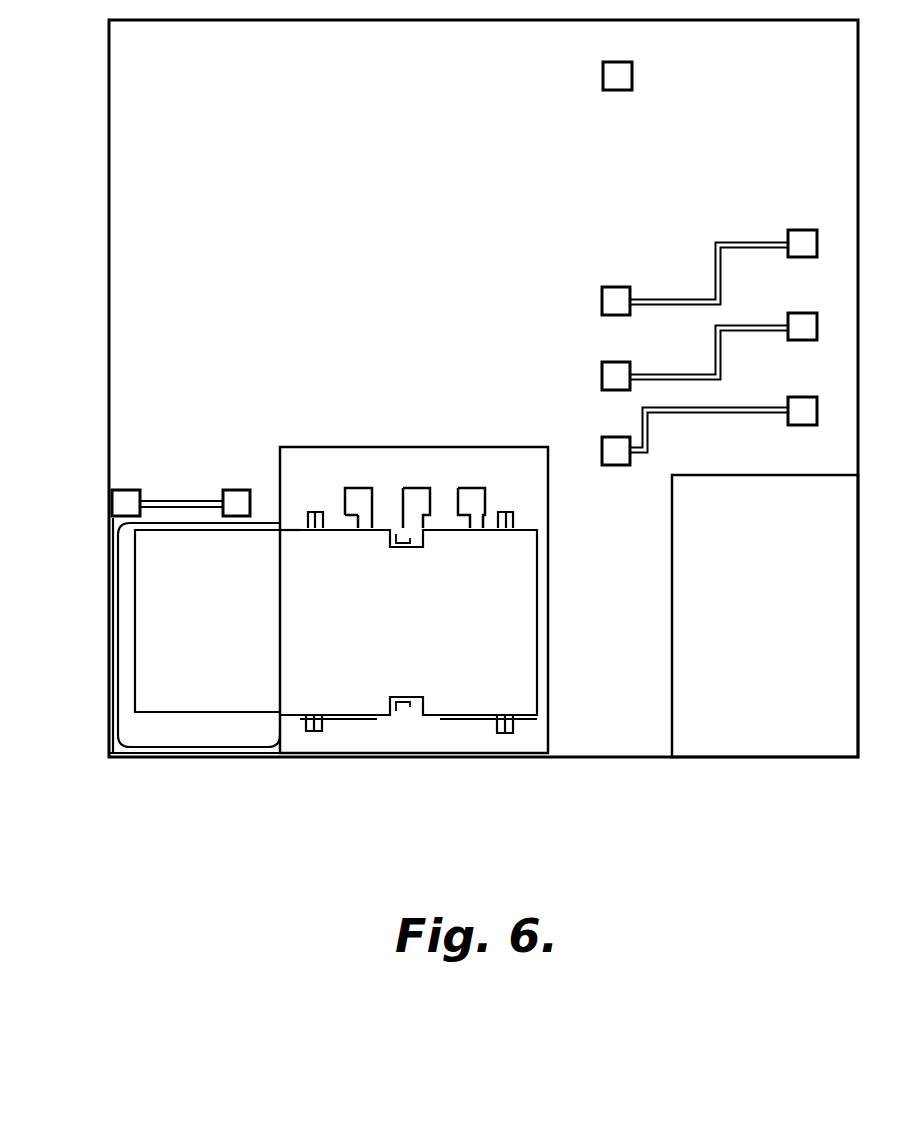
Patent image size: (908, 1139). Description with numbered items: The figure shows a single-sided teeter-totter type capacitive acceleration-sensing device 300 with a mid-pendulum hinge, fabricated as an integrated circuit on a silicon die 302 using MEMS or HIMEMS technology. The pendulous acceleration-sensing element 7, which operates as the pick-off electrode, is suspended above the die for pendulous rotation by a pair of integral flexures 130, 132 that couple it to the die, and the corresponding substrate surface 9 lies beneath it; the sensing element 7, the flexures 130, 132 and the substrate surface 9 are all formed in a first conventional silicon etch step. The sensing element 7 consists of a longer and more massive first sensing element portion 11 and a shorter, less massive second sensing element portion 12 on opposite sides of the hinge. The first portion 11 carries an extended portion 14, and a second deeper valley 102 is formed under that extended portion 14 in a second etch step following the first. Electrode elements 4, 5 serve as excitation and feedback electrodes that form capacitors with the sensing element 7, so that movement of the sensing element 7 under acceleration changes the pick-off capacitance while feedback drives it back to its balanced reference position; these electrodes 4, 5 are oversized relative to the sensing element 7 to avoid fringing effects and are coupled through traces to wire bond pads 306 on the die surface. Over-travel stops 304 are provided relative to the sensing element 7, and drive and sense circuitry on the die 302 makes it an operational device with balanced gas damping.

The silicon die 302 is at (109, 388).
The capacitive acceleration-sensing device 300 is at (548, 633).
The second deeper valley 102 is at (193, 733).
The extended portion 14 is at (221, 632).
The first sensing element portion 11 is at (340, 632).
The second sensing element portion 12 is at (496, 643).
The substrate surface 9 is at (528, 491).
The acceleration-sensing element 7 is at (300, 545).
The electrode element 4 is at (338, 528).
The electrode element 5 is at (488, 528).
The wire bond pad 306 is at (360, 488).
The over-travel stop 304 is at (320, 729).
The flexure 130 is at (405, 551).
The flexure 132 is at (407, 691).